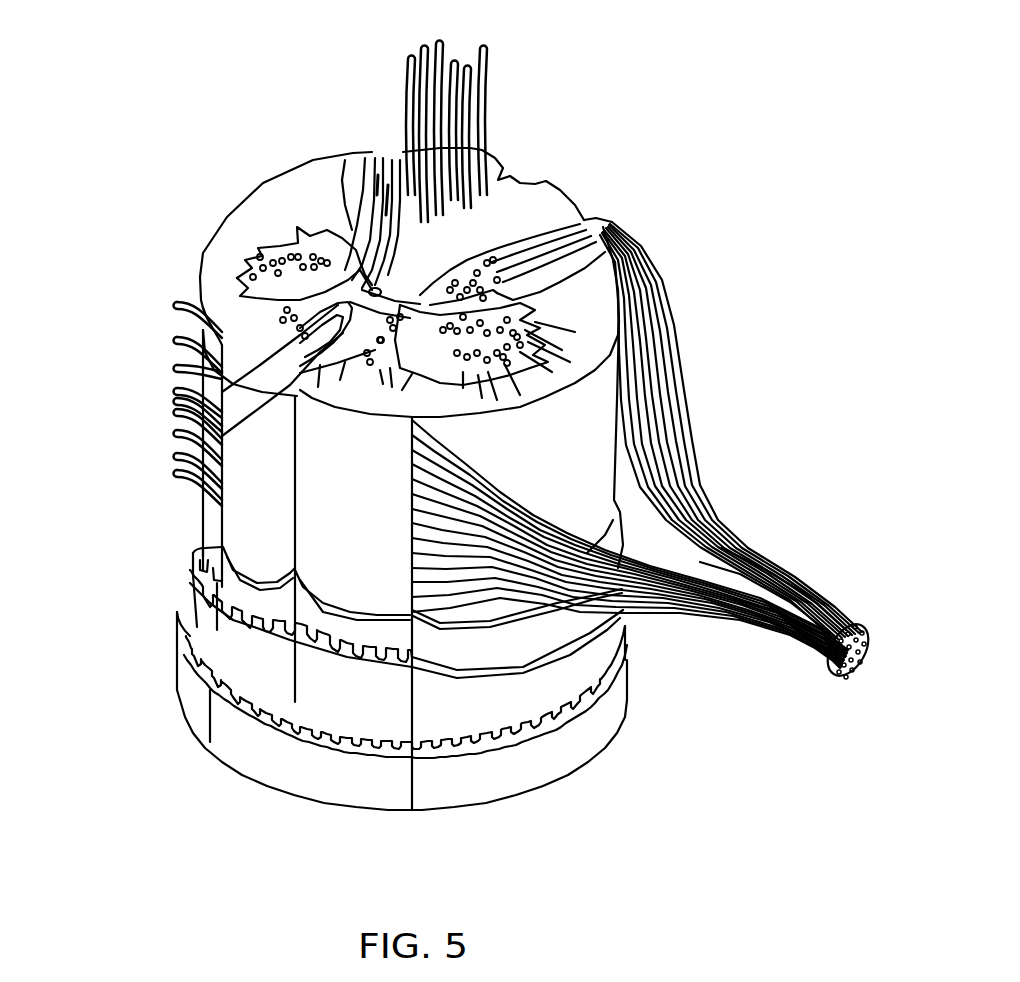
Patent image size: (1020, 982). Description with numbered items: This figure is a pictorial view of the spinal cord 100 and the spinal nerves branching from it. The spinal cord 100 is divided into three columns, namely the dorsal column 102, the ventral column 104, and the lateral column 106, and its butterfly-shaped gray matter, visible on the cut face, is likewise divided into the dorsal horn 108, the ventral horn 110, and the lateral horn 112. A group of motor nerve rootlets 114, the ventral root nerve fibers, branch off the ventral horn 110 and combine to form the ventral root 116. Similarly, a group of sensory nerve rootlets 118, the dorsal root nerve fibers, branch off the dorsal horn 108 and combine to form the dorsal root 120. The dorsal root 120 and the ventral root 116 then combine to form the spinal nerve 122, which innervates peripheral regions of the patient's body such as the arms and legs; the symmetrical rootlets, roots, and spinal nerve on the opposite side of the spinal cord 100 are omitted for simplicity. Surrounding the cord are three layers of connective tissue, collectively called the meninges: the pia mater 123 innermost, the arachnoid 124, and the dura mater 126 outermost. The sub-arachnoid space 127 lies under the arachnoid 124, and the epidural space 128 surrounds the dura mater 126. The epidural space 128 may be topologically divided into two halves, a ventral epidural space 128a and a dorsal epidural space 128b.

The spinal cord 100 is at (652, 50).
The dorsal column 102 is at (505, 203).
The ventral column 104 is at (222, 436).
The lateral column 106 is at (284, 198).
The dorsal horn 108 is at (345, 253).
The ventral horn 110 is at (222, 392).
The lateral horn 112 is at (240, 262).
The motor nerve rootlets 114 is at (135, 376).
The ventral root 116 is at (666, 617).
The sensory nerve rootlets 118 is at (658, 296).
The dorsal root 120 is at (764, 566).
The spinal nerve 122 is at (846, 680).
The pia mater 123 is at (203, 580).
The arachnoid 124 is at (240, 736).
The dura mater 126 is at (240, 648).
The sub-arachnoid space 127 is at (349, 660).
The epidural space 128 is at (265, 770).
The ventral epidural space 128a is at (290, 820).
The dorsal epidural space 128b is at (508, 115).